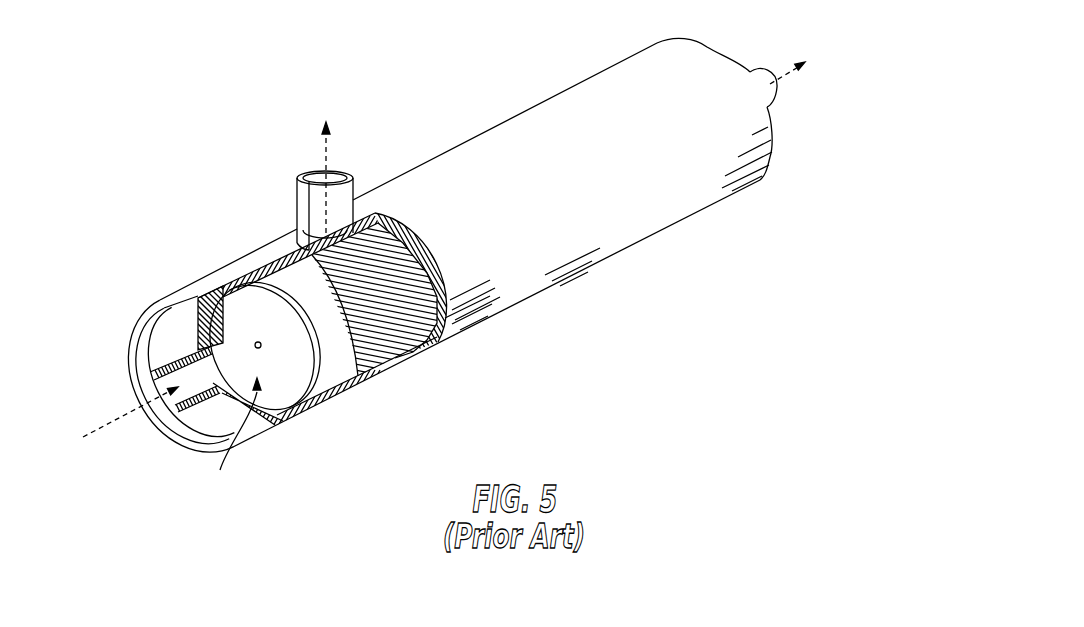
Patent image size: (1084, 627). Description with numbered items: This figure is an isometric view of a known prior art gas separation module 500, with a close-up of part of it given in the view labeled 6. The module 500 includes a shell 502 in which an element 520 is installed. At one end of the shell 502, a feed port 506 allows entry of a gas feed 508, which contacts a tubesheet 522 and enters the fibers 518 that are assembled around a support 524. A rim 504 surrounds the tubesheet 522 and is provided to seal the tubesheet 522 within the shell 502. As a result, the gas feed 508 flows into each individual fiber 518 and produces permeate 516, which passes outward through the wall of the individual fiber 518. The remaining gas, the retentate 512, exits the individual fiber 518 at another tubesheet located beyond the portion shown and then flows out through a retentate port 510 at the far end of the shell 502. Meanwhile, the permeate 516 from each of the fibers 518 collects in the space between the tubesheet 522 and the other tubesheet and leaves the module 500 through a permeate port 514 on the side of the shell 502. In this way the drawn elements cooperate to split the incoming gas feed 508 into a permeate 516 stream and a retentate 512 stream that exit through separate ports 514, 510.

The gas separation module 500 is at (232, 80).
The shell 502 is at (513, 120).
The rim 504 is at (333, 370).
The feed port 506 is at (175, 398).
The gas feed 508 is at (110, 420).
The retentate port 510 is at (750, 68).
The retentate 512 is at (787, 77).
The permeate port 514 is at (357, 197).
The permeate 516 is at (322, 157).
The fibers 518 is at (385, 362).
The element 520 is at (229, 440).
The tubesheet 522 is at (297, 403).
The support 524 is at (258, 340).
The section line for FIG. 6 is at (431, 277).